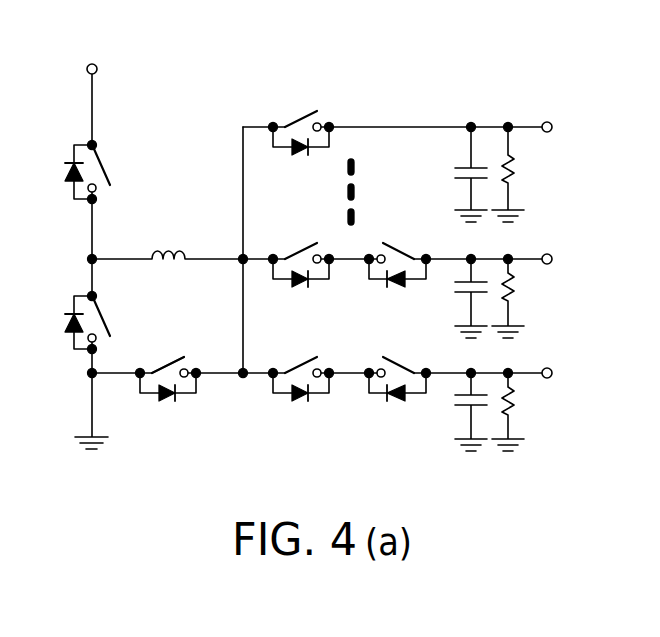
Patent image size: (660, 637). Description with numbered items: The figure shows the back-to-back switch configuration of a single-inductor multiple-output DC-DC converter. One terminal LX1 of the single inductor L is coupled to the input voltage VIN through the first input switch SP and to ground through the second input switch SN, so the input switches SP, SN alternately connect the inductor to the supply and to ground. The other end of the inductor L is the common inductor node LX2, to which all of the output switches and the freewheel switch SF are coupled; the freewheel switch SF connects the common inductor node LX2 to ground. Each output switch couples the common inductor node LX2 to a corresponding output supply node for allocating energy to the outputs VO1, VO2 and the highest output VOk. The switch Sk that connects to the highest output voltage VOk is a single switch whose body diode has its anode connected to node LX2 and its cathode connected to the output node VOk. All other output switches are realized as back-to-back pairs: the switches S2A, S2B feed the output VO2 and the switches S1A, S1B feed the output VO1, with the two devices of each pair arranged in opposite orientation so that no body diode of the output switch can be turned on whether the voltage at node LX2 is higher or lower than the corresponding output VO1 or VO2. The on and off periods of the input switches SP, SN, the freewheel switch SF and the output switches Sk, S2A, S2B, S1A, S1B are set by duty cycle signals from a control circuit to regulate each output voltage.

The input voltage VIN is at (91, 56).
The first input switch SP is at (100, 172).
The second input switch SN is at (101, 323).
The inductor terminal LX1 is at (97, 254).
The inductor L is at (167, 239).
The common inductor node LX2 is at (240, 254).
The freewheel switch SF is at (168, 367).
The output switch Sk is at (301, 116).
The back-to-back output switch S2A is at (301, 248).
The back-to-back output switch S2B is at (398, 248).
The back-to-back output switch S1A is at (301, 363).
The back-to-back output switch S1B is at (398, 363).
The highest output voltage VOk is at (527, 168).
The output VO2 is at (527, 292).
The output VO1 is at (527, 405).